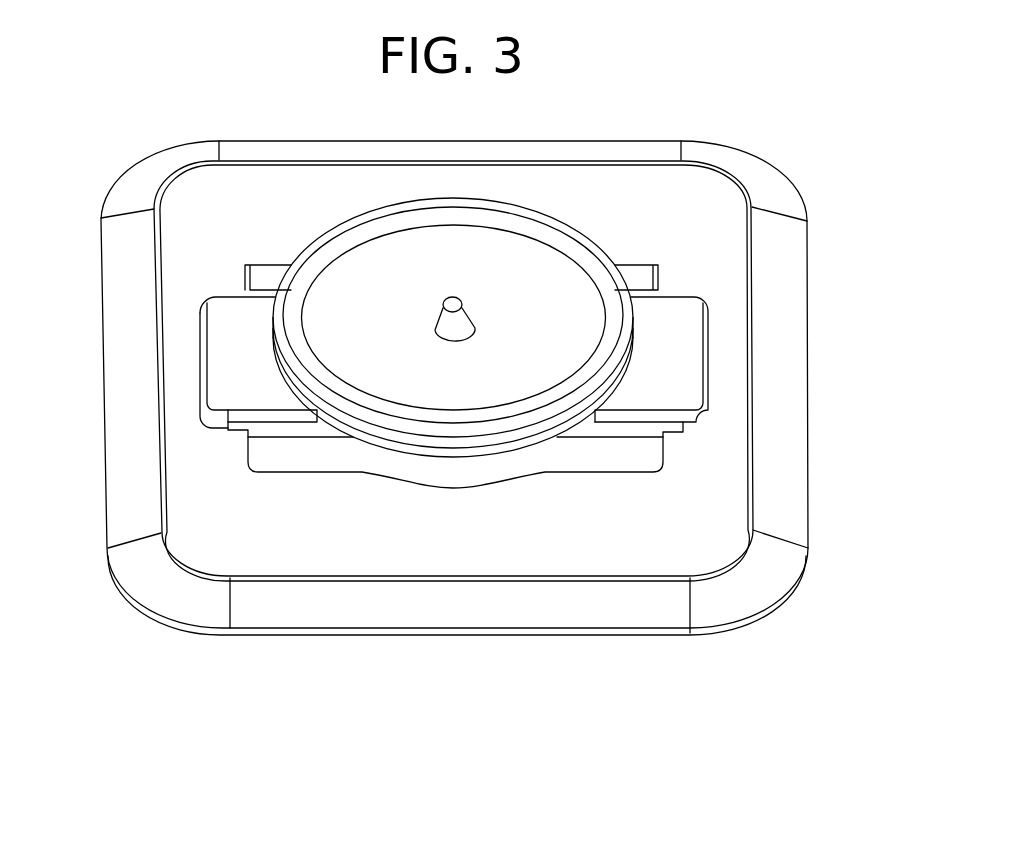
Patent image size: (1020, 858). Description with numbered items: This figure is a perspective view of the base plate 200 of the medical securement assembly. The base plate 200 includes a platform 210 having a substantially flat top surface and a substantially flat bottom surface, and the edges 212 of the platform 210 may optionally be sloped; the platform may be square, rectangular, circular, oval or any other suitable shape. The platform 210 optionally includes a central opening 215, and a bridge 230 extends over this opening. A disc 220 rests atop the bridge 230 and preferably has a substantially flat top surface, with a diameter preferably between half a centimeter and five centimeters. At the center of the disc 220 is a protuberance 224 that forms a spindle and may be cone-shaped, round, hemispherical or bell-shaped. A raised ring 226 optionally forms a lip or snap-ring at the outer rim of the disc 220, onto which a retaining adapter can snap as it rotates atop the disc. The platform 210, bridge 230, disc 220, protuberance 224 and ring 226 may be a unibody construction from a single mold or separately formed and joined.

The base plate 200 is at (253, 114).
The platform 210 is at (577, 555).
The edges 212 is at (370, 613).
The central opening 215 is at (625, 457).
The disc 220 is at (334, 309).
The protuberance 224 is at (457, 318).
The raised ring 226 is at (504, 212).
The bridge 230 is at (680, 380).